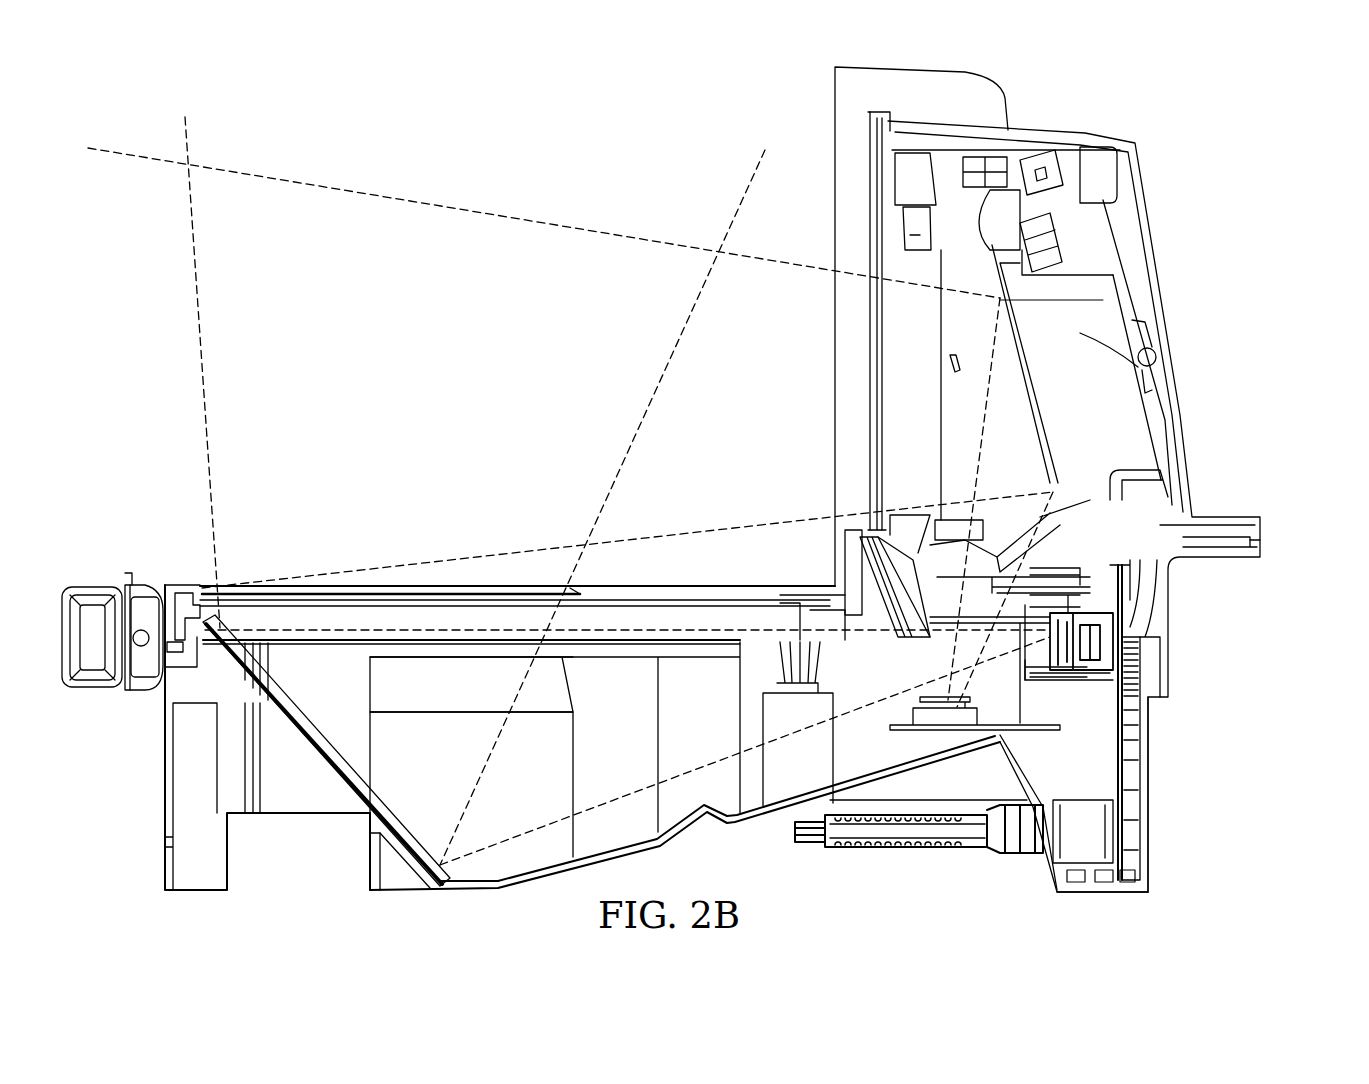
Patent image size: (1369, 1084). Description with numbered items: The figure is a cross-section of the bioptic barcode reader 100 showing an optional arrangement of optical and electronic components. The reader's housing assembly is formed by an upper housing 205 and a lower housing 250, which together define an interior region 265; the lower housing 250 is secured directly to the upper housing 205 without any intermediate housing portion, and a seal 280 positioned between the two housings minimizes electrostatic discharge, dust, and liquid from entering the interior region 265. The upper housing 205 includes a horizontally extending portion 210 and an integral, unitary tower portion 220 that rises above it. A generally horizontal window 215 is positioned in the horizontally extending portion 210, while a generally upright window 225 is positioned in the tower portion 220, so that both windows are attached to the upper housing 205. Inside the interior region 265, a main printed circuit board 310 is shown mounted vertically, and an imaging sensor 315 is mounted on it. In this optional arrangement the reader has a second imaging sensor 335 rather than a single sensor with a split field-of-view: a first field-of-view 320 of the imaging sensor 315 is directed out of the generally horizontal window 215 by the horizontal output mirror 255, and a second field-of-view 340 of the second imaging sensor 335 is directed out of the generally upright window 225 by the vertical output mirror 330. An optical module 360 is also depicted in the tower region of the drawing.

The bioptic barcode reader 100 is at (214, 122).
The upper housing 205 is at (832, 546).
The horizontally extending portion 210 is at (747, 588).
The generally horizontal window 215 is at (287, 590).
The tower portion 220 is at (1162, 272).
The generally upright window 225 is at (873, 333).
The lower housing 250 is at (1153, 782).
The horizontal output mirror 255 is at (317, 730).
The interior region 265 is at (683, 693).
The seal 280 is at (172, 668).
The main printed circuit board 310 is at (1117, 705).
The imaging sensor 315 is at (1140, 645).
The first field-of-view 320 is at (712, 765).
The vertical output mirror 330 is at (1157, 373).
The second imaging sensor 335 is at (937, 718).
The second field-of-view 340 is at (985, 412).
The optical module 360 is at (1030, 160).